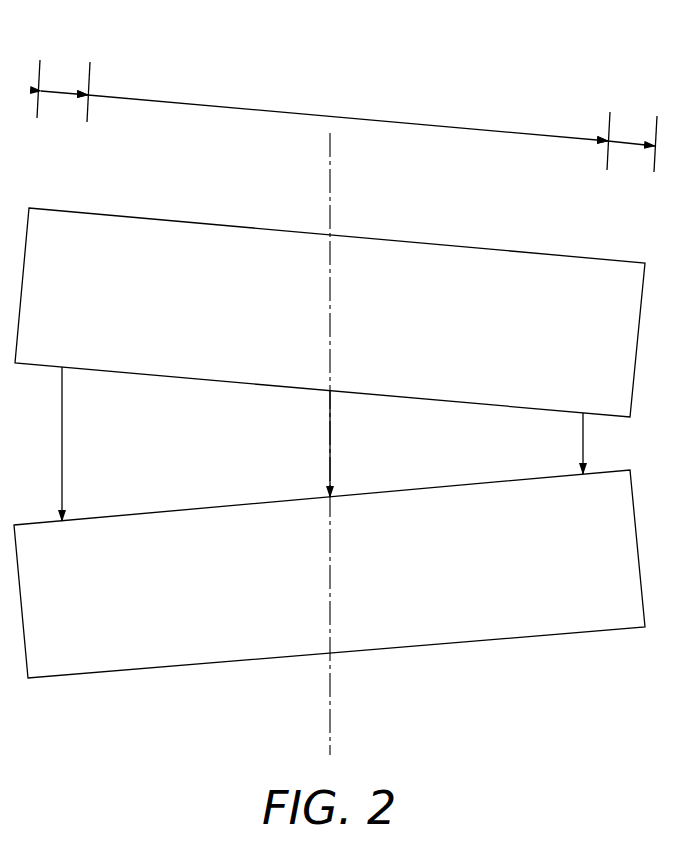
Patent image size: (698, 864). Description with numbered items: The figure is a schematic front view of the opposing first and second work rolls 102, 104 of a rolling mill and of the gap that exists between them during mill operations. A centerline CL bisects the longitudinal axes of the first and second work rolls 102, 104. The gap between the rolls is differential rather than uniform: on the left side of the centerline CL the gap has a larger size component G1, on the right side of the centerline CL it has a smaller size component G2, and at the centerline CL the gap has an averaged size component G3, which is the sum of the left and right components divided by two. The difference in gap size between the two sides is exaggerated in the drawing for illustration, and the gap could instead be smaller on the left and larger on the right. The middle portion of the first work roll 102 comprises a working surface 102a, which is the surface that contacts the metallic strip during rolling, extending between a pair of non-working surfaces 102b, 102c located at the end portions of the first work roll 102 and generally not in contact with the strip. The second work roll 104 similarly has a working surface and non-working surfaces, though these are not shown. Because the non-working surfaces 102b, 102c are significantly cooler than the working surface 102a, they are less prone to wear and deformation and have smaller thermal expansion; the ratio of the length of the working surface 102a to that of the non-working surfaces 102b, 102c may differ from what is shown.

The first work roll 102 is at (466, 255).
The second work roll 104 is at (145, 663).
The working surface 102a is at (347, 116).
The non-working surface 102b is at (66, 80).
The non-working surface 102c is at (636, 132).
The larger size gap component G1 is at (42, 444).
The smaller size gap component G2 is at (564, 443).
The averaged size gap component G3 is at (311, 444).
The centerline CL is at (331, 710).